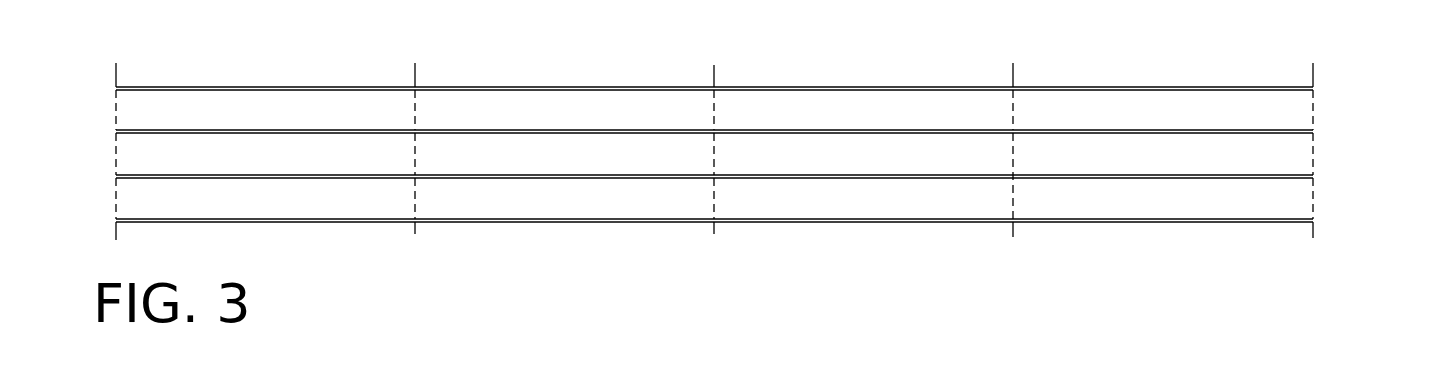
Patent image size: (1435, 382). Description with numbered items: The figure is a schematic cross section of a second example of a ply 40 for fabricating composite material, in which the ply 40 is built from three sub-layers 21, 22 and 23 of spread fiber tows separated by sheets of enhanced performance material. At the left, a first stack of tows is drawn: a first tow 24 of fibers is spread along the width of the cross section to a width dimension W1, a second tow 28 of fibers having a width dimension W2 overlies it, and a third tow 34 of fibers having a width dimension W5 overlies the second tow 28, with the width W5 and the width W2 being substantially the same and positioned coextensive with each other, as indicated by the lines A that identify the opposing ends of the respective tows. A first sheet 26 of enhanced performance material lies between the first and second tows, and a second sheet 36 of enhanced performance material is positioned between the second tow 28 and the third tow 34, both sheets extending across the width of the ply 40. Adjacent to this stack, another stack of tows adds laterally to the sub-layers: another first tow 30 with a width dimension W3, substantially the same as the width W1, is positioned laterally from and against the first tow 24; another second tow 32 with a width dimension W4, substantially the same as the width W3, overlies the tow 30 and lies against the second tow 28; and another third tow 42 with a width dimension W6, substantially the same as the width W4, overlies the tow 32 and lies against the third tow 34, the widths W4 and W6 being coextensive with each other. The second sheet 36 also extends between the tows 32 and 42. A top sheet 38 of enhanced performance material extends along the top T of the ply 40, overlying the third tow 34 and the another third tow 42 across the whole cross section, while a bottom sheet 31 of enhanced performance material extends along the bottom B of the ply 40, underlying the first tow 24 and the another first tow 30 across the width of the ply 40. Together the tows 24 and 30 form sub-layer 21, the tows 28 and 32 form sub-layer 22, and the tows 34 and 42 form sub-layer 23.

The sub-layer 21 is at (1333, 209).
The sub-layer 22 is at (1330, 169).
The sub-layer 23 is at (1333, 107).
The first tow 24 is at (317, 208).
The first sheet of enhanced performance material 26 is at (117, 177).
The second tow 28 is at (125, 143).
The another first tow 30 is at (567, 205).
The bottom sheet of enhanced performance material 31 is at (470, 222).
The another second tow 32 is at (698, 158).
The third tow 34 is at (282, 98).
The second sheet of enhanced performance material 36 is at (116, 131).
The top sheet of enhanced performance material 38 is at (248, 88).
The ply 40 is at (1246, 56).
The another third tow 42 is at (600, 103).
The lines identifying opposing ends of the tows A is at (116, 75).
The top of ply T is at (1062, 72).
The bottom of ply B is at (1065, 242).
The width dimension of first tow W1 is at (118, 202).
The width dimension of second tow W2 is at (413, 157).
The width dimension of another first tow W3 is at (417, 188).
The width dimension of another second tow W4 is at (417, 144).
The width dimension of third tow W5 is at (413, 110).
The width dimension of another third tow W6 is at (417, 119).